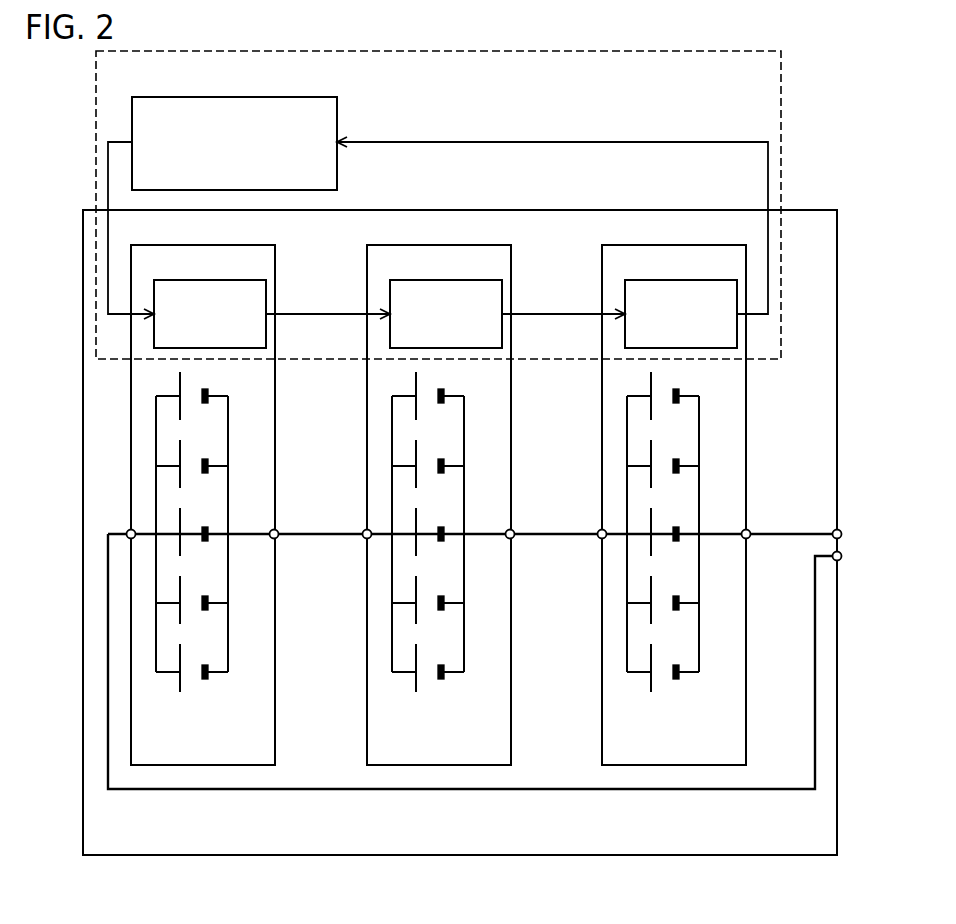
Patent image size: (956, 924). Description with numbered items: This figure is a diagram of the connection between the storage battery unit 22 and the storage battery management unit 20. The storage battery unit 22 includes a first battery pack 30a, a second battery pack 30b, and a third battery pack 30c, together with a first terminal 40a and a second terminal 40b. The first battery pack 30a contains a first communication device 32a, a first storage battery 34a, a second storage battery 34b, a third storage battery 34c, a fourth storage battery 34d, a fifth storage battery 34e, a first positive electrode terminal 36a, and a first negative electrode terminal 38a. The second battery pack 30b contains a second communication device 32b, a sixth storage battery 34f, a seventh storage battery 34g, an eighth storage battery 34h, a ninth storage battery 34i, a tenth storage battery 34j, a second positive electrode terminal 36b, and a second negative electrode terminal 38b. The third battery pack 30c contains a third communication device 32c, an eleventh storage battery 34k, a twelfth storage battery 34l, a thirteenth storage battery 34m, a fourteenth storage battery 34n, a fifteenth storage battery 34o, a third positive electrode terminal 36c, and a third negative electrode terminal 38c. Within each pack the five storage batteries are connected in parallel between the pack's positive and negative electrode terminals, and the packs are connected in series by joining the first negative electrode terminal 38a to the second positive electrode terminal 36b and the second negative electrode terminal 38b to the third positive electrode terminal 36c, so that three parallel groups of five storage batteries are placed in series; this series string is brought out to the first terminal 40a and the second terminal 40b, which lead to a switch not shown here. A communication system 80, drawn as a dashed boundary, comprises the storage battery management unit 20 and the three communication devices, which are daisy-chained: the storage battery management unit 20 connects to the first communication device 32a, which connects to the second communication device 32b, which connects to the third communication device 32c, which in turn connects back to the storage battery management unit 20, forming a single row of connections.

The storage battery management unit 20 is at (325, 97).
The storage battery unit 22 is at (240, 855).
The communication system 80 is at (781, 98).
The first battery pack 30a is at (265, 245).
The second battery pack 30b is at (501, 245).
The third battery pack 30c is at (736, 245).
The first communication device 32a is at (190, 280).
The second communication device 32b is at (426, 280).
The third communication device 32c is at (661, 280).
The first storage battery 34a is at (203, 392).
The second storage battery 34b is at (203, 460).
The third storage battery 34c is at (203, 524).
The fourth storage battery 34d is at (205, 594).
The fifth storage battery 34e is at (205, 663).
The sixth storage battery 34f is at (439, 392).
The seventh storage battery 34g is at (439, 460).
The eighth storage battery 34h is at (439, 524).
The ninth storage battery 34i is at (441, 594).
The tenth storage battery 34j is at (441, 663).
The eleventh storage battery 34k is at (674, 392).
The twelfth storage battery 34l is at (674, 460).
The thirteenth storage battery 34m is at (674, 524).
The fourteenth storage battery 34n is at (676, 594).
The fifteenth storage battery 34o is at (676, 663).
The first positive electrode terminal 36a is at (127, 531).
The second positive electrode terminal 36b is at (365, 530).
The third positive electrode terminal 36c is at (600, 530).
The first negative electrode terminal 38a is at (276, 539).
The second negative electrode terminal 38b is at (512, 539).
The third negative electrode terminal 38c is at (748, 539).
The first terminal 40a is at (842, 559).
The second terminal 40b is at (842, 537).